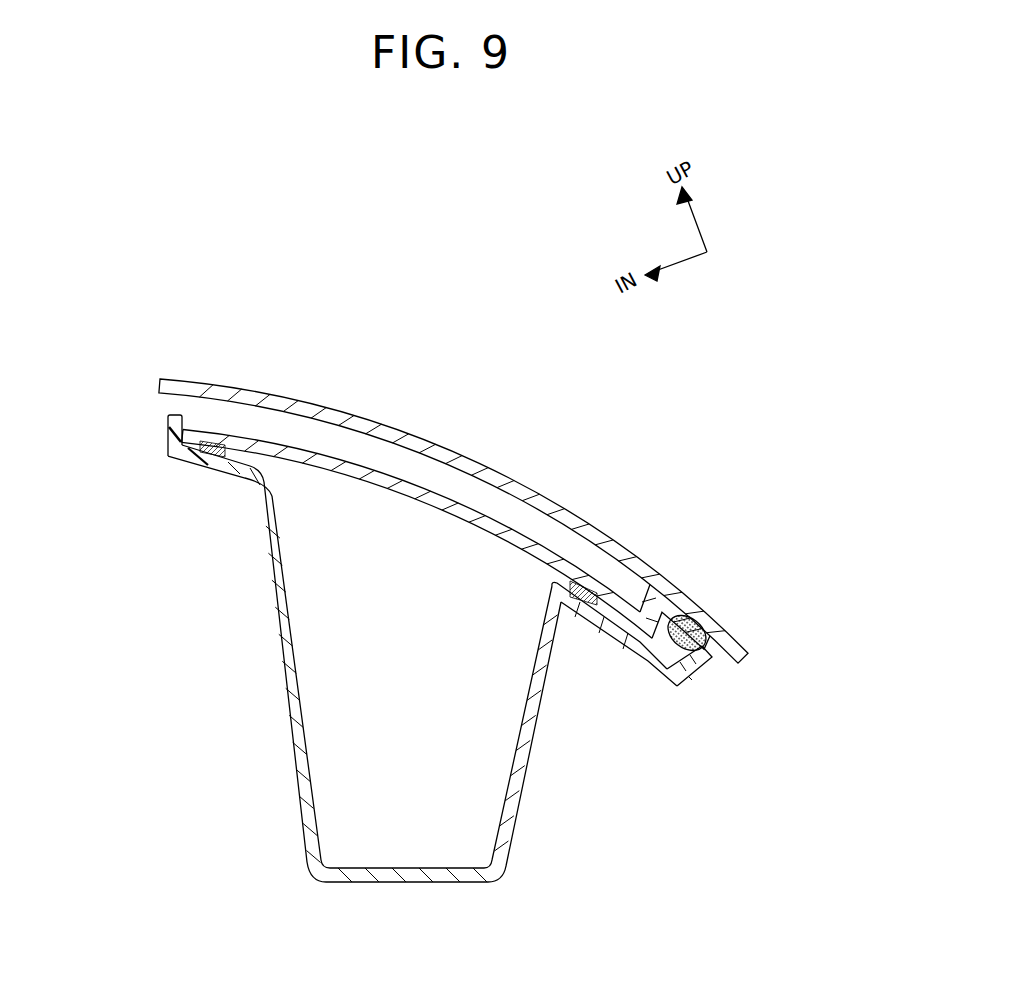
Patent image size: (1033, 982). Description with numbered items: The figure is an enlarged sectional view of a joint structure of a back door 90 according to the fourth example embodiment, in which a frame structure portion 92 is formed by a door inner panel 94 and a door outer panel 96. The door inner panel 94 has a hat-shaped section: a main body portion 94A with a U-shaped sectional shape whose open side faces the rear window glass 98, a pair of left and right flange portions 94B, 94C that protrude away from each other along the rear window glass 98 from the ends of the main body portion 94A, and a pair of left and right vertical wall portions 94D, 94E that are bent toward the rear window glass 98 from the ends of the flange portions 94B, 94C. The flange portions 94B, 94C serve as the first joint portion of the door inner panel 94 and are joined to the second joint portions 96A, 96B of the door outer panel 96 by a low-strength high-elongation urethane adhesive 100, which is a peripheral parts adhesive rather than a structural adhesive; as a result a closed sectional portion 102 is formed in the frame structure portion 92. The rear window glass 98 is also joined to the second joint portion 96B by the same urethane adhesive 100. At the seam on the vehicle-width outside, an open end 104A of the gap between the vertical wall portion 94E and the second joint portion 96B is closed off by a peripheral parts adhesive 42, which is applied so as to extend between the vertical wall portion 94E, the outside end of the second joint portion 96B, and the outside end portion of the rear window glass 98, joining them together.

The back door 90 is at (652, 445).
The frame structure portion 92 is at (352, 884).
The door inner panel 94 is at (297, 780).
The main body portion 94A is at (284, 683).
The flange portion 94B is at (212, 466).
The flange portion 94C is at (651, 663).
The vertical wall portion 94D is at (168, 426).
The vertical wall portion 94E is at (708, 662).
The door outer panel 96 is at (434, 490).
The second joint portion 96A is at (228, 434).
The second joint portion 96B is at (660, 622).
The rear window glass 98 is at (530, 490).
The low-strength high-elongation urethane adhesive 100 is at (177, 458).
The closed sectional portion 102 is at (382, 681).
The open end 104A is at (689, 677).
The peripheral parts adhesive 42 is at (700, 614).